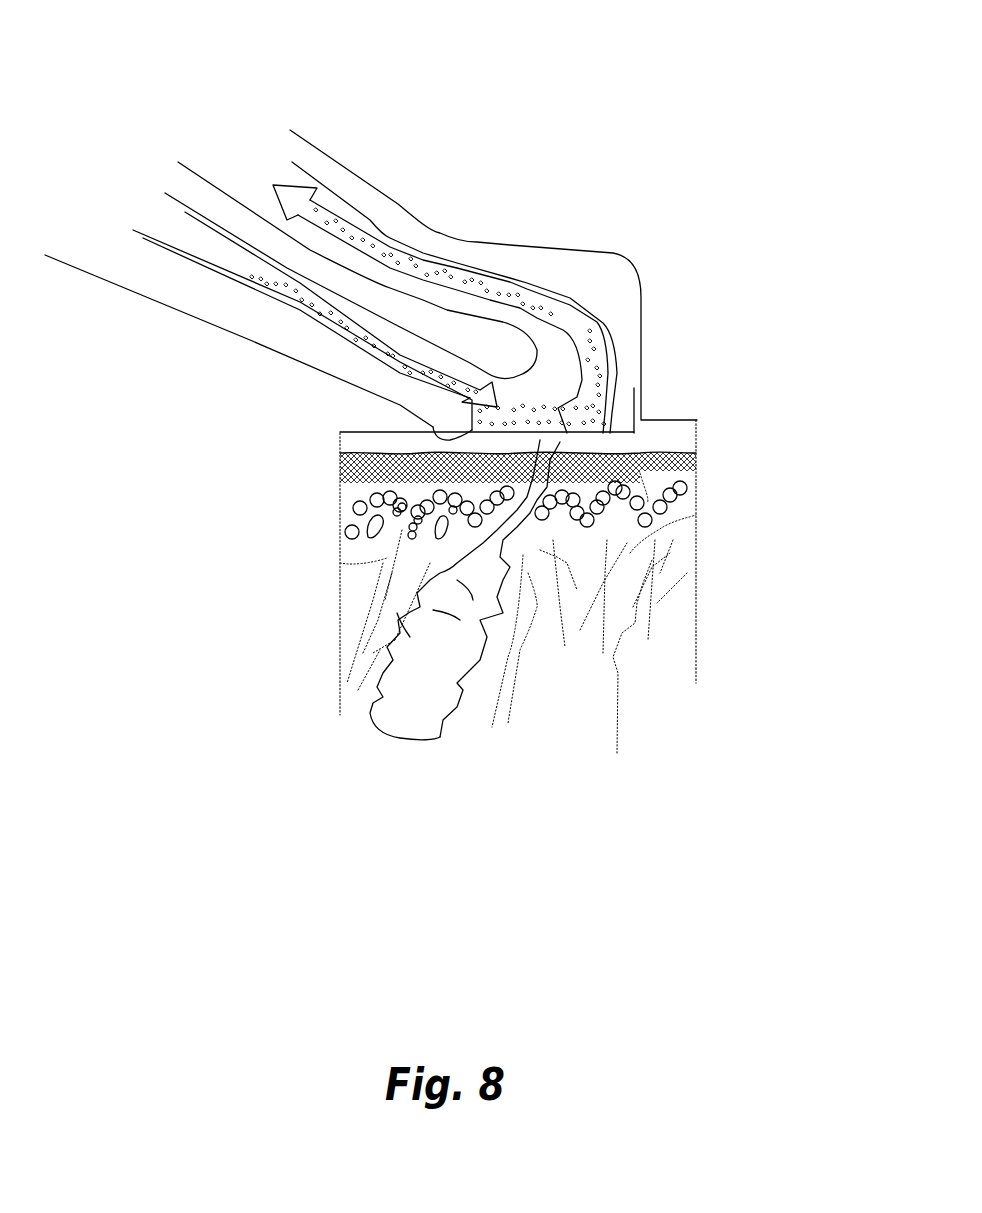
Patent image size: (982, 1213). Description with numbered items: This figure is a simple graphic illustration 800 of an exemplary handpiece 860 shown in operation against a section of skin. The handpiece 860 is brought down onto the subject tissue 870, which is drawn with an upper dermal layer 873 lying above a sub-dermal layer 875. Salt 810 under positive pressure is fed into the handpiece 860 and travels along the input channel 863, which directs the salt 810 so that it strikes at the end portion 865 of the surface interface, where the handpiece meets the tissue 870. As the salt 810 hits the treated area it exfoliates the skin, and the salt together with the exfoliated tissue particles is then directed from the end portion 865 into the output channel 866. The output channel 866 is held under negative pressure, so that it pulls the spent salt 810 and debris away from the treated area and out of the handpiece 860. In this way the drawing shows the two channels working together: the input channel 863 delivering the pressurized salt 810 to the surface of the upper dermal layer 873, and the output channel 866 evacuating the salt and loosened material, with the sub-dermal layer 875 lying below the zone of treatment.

The graphic illustration 800 is at (817, 43).
The salt 810 is at (495, 285).
The output channel 866 is at (268, 176).
The input channel 863 is at (183, 230).
The handpiece 860 is at (207, 308).
The end portion 865 is at (471, 429).
The subject tissue 870 is at (336, 612).
The upper dermal layer 873 is at (660, 438).
The sub-dermal layer 875 is at (695, 500).